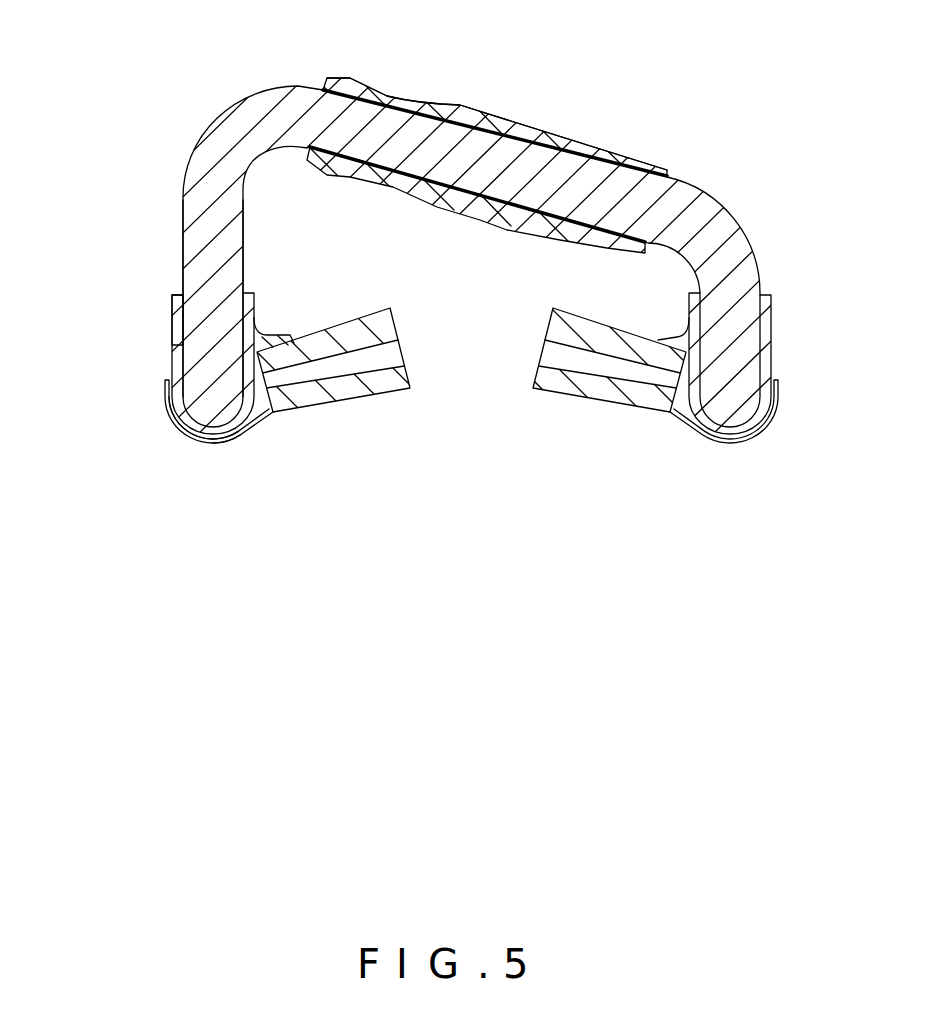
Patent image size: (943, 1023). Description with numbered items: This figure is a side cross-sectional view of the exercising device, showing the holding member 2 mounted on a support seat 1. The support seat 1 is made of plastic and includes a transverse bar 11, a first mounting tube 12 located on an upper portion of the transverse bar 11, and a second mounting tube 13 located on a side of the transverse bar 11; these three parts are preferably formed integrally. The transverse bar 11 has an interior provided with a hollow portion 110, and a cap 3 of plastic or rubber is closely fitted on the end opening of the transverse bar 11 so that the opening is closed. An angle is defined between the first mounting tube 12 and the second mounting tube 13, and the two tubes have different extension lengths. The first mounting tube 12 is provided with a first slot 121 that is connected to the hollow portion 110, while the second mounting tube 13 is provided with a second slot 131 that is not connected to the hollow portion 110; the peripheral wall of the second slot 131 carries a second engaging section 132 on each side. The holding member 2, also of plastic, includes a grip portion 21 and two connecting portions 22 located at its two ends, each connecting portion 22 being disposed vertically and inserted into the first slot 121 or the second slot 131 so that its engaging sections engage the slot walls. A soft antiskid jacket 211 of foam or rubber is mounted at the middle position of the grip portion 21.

The support seat 1 is at (180, 395).
The transverse bar 11 is at (192, 427).
The hollow portion 110 is at (175, 407).
The first mounting tube 12 is at (177, 358).
The first slot 121 is at (172, 338).
The second mounting tube 13 is at (486, 377).
The second slot 131 is at (323, 345).
The second engaging section 132 is at (393, 347).
The holding member 2 is at (178, 137).
The grip portion 21 is at (543, 160).
The soft antiskid jacket 211 is at (446, 107).
The connecting portion 22 is at (192, 253).
The cap 3 is at (231, 450).